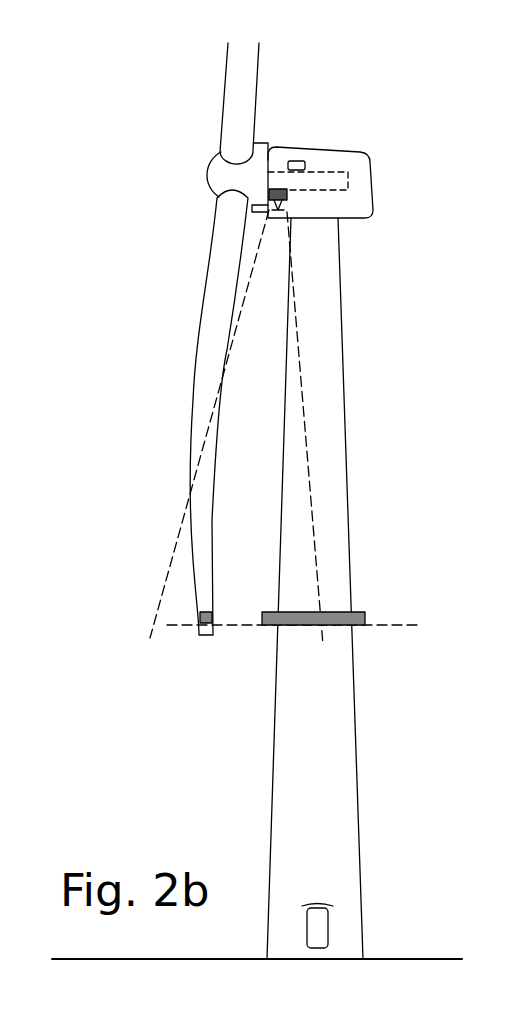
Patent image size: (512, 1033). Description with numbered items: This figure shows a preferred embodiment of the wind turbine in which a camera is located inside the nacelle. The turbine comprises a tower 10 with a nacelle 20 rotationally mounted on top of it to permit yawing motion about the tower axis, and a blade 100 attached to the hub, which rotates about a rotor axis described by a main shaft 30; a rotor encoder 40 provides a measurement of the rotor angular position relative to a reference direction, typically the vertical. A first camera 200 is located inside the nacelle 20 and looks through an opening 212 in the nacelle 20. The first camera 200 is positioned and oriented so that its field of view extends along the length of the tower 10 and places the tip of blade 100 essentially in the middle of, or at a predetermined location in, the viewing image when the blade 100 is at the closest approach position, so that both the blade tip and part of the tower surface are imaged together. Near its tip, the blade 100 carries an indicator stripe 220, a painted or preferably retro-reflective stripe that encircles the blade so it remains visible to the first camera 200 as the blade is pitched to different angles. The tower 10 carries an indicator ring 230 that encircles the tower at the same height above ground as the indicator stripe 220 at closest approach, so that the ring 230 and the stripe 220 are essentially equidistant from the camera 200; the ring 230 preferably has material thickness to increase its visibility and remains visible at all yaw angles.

The tower 10 is at (340, 738).
The nacelle 20 is at (373, 213).
The main shaft 30 is at (338, 175).
The rotor encoder 40 is at (293, 161).
The blade 100 is at (208, 308).
The first camera 200 is at (262, 196).
The opening 212 is at (270, 200).
The indicator stripe 220 is at (200, 614).
The indicator ring 230 is at (355, 612).